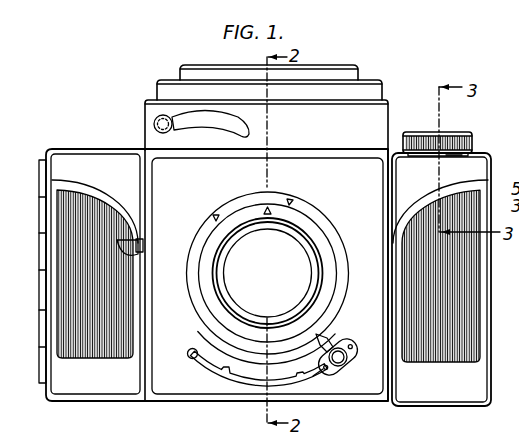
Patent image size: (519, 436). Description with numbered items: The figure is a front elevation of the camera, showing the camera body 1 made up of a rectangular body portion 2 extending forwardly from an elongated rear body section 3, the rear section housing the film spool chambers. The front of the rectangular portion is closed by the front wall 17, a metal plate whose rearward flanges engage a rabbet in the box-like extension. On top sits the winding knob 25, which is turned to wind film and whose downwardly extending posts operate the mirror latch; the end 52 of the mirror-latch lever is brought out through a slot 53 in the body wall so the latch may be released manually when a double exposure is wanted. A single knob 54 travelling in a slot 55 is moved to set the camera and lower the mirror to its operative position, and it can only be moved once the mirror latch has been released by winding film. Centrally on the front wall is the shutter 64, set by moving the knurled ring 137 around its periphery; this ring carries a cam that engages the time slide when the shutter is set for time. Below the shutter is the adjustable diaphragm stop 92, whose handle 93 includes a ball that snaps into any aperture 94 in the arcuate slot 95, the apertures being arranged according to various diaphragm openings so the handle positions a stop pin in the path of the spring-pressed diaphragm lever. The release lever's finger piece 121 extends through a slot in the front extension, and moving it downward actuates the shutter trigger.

The camera body 1 is at (145, 147).
The rectangular body portion 2 is at (353, 151).
The rear body section 3 is at (477, 386).
The front wall 17 is at (178, 410).
The winding knob 25 is at (465, 133).
The end of lever 52 is at (433, 155).
The slot 53 is at (452, 156).
The knob 54 is at (156, 118).
The slot 55 is at (218, 128).
The shutter 64 is at (192, 313).
The adjustable stop 92 is at (328, 340).
The handle 93 is at (347, 360).
The aperture 94 is at (315, 375).
The arcuate slot 95 is at (243, 387).
The finger piece 121 is at (138, 242).
The ring 137 is at (338, 245).